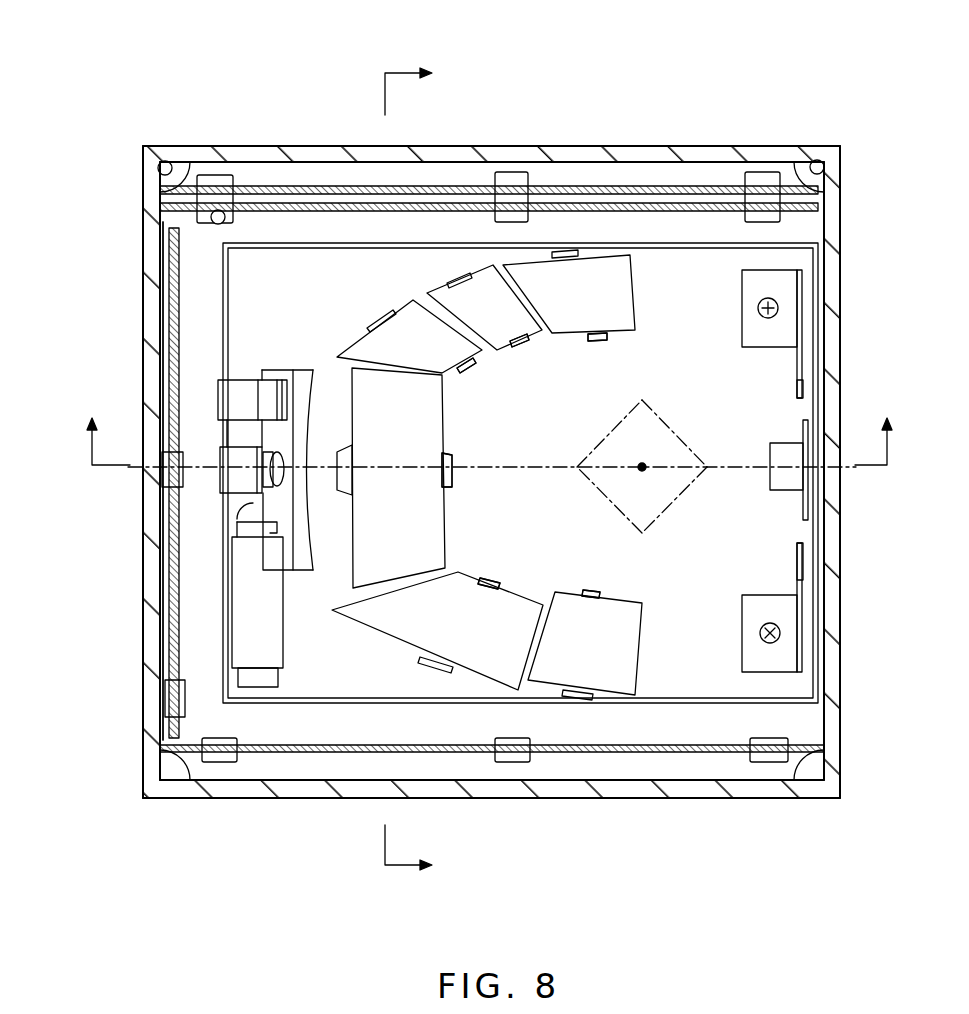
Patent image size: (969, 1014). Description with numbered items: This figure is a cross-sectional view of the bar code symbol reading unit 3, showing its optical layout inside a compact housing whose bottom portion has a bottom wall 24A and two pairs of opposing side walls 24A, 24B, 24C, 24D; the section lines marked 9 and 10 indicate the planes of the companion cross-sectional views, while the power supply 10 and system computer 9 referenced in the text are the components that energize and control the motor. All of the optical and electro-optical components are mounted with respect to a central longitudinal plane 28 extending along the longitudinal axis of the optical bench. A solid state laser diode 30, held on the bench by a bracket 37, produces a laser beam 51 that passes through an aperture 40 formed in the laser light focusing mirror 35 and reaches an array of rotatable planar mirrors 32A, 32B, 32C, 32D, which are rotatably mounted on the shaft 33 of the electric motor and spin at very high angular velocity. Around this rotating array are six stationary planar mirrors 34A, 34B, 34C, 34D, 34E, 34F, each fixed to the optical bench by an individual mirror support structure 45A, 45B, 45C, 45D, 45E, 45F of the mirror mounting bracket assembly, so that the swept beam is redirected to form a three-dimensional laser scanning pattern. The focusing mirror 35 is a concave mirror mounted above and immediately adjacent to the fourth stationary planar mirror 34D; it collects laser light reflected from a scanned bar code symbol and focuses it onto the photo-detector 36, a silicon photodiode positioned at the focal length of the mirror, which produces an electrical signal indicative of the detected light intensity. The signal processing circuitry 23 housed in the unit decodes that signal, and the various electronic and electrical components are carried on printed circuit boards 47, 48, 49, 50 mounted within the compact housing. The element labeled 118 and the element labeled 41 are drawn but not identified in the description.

The bar code symbol reading unit 3 is at (810, 113).
The system computer 9 is at (491, 442).
The power supply 10 is at (408, 470).
The signal processing circuitry 23 is at (160, 588).
The bottom wall / side wall 24A is at (145, 318).
The side wall 24B is at (842, 318).
The side wall 24C is at (491, 436).
The side wall 24D is at (650, 790).
The central longitudinal plane 28 is at (513, 479).
The solid state laser diode 30 is at (263, 642).
The rotatable planar mirror 32A is at (620, 423).
The rotatable planar mirror 32B is at (660, 413).
The rotatable planar mirror 32C is at (668, 515).
The rotatable planar mirror 32D is at (618, 513).
The shaft 33 is at (646, 466).
The first stationary planar mirror 34A is at (613, 305).
The second stationary planar mirror 34B is at (503, 315).
The third stationary planar mirror 34C is at (437, 352).
The fourth stationary planar mirror 34D is at (420, 451).
The fifth stationary planar mirror 34E is at (490, 635).
The sixth stationary planar mirror 34F is at (617, 655).
The laser light focusing mirror 35 is at (312, 392).
The photo-detector 36 is at (808, 442).
The bracket 37 is at (245, 620).
The aperture 40 is at (306, 458).
The lamp socket 41 is at (238, 455).
The mirror support structure 45A is at (632, 335).
The mirror support structure 45B is at (520, 348).
The mirror support structure 45C is at (465, 369).
The mirror support structure 45D is at (445, 437).
The mirror support structure 45E is at (488, 574).
The mirror support structure 45F is at (605, 592).
The printed circuit board 47 is at (395, 746).
The printed circuit board 48 is at (162, 525).
The printed circuit board 49 is at (405, 203).
The printed circuit board 50 is at (285, 186).
The laser beam 51 is at (243, 535).
The base plate 118 is at (595, 712).